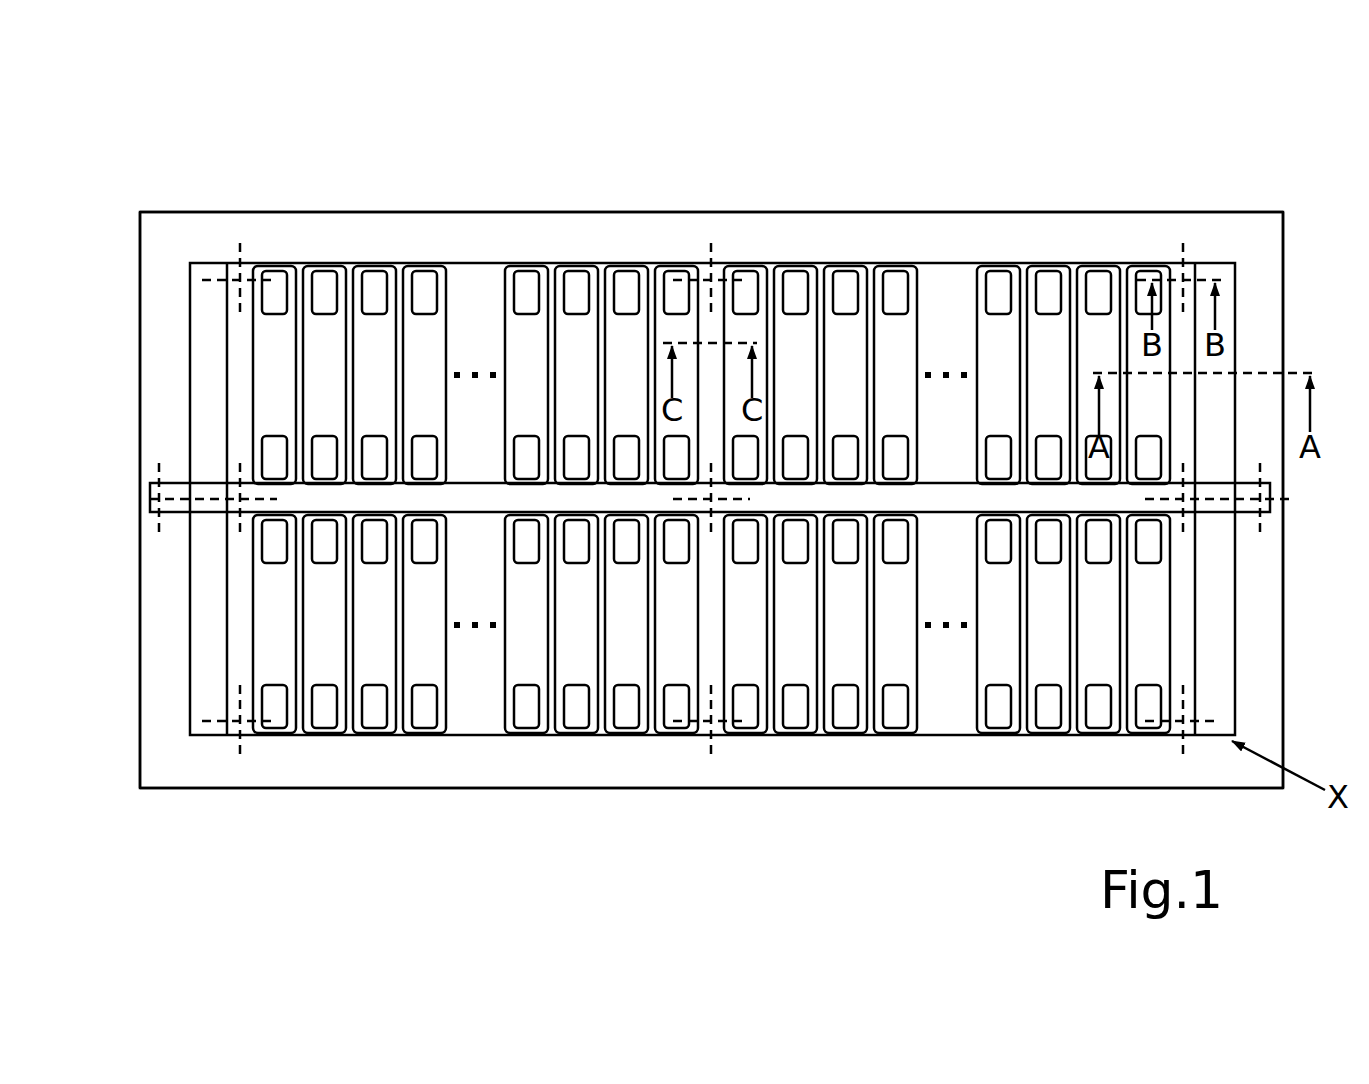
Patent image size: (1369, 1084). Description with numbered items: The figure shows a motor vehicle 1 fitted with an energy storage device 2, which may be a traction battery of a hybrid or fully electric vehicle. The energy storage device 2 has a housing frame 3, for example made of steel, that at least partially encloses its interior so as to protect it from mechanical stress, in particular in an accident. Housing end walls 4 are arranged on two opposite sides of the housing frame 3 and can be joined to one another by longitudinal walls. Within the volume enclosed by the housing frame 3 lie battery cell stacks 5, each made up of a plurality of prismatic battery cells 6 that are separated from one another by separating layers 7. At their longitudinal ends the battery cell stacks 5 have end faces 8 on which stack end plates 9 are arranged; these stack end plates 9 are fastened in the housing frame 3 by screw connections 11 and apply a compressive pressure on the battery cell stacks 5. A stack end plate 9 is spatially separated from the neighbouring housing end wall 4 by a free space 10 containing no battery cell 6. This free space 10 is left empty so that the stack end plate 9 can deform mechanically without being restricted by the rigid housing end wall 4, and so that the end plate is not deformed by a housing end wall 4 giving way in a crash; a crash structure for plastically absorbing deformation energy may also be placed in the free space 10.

The motor vehicle 1 is at (98, 200).
The energy storage device 2 is at (190, 167).
The housing frame 3 is at (947, 775).
The housing end wall 4 is at (145, 633).
The battery cell stack 5 is at (697, 203).
The battery cell 6 is at (1051, 358).
The separating layer 7 is at (1023, 288).
The end face 8 is at (265, 187).
The stack end plate 9 is at (1183, 395).
The free space 10 is at (198, 287).
The screw connection 11 is at (236, 708).